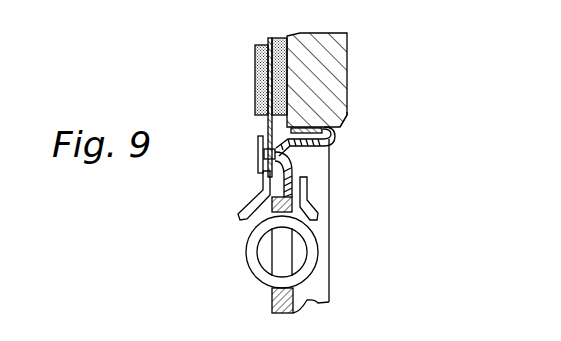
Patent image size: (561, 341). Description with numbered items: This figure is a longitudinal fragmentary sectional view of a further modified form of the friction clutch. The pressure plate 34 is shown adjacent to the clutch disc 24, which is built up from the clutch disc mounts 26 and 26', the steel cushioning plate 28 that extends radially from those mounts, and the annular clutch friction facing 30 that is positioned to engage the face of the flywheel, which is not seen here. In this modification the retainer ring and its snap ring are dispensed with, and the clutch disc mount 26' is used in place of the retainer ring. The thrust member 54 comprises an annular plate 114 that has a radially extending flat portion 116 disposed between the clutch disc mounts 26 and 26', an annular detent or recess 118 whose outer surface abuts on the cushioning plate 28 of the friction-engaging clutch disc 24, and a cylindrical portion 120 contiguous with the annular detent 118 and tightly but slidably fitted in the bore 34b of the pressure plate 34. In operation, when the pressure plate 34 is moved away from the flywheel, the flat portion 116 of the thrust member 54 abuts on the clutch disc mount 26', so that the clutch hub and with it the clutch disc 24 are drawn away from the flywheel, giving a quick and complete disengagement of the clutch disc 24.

The clutch disc 24 is at (257, 126).
The clutch disc mount 26 is at (255, 242).
The clutch disc mount 26' is at (326, 186).
The cushioning plate 28 is at (268, 122).
The clutch friction facing 30 is at (278, 40).
The pressure plate 34 is at (348, 60).
The bore 34b is at (350, 127).
The thrust member 54 is at (437, 168).
The annular plate 114 is at (333, 139).
The flat portion 116 is at (267, 177).
The annular detent 118 is at (284, 157).
The cylindrical portion 120 is at (340, 134).